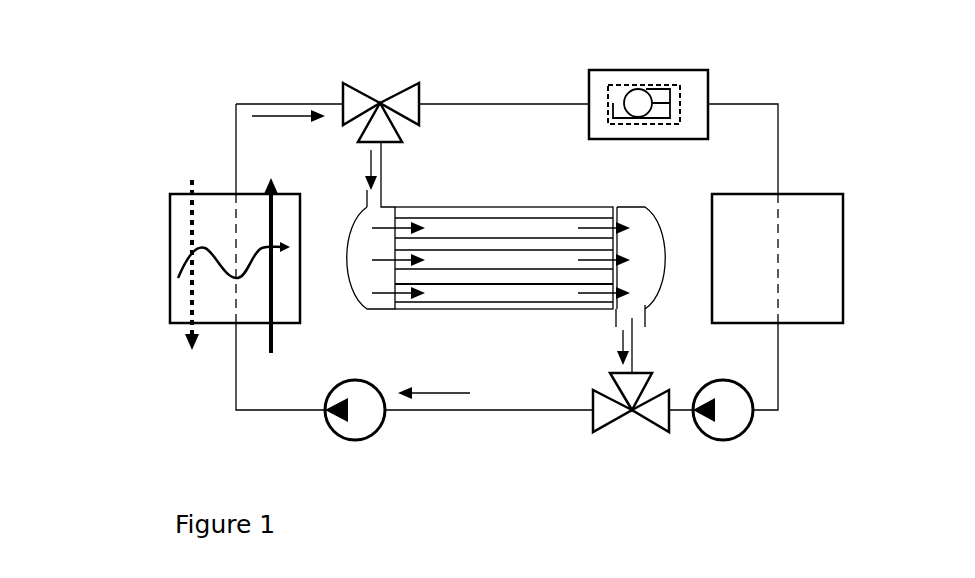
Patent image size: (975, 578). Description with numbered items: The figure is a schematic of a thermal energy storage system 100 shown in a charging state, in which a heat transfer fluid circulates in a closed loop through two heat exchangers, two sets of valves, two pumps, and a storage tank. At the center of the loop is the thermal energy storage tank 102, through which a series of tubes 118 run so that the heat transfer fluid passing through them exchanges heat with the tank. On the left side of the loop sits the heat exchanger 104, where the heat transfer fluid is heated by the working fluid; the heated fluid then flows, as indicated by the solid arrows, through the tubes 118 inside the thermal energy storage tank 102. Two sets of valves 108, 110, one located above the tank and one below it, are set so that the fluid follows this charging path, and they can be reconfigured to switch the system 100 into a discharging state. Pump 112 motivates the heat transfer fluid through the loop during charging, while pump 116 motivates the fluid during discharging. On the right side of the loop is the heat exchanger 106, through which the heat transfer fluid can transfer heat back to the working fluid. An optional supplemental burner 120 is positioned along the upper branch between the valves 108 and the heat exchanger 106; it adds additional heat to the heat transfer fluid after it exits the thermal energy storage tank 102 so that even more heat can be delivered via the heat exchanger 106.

The thermal energy storage system 100 is at (70, 102).
The thermal energy storage tank 102 is at (526, 207).
The heat exchanger 104 is at (170, 258).
The heat exchanger 106 is at (843, 257).
The set of valves 108 is at (371, 70).
The set of valves 110 is at (632, 445).
The pump 112 is at (362, 440).
The pump 116 is at (728, 440).
The tubes 118 is at (455, 293).
The supplemental burner 120 is at (650, 70).